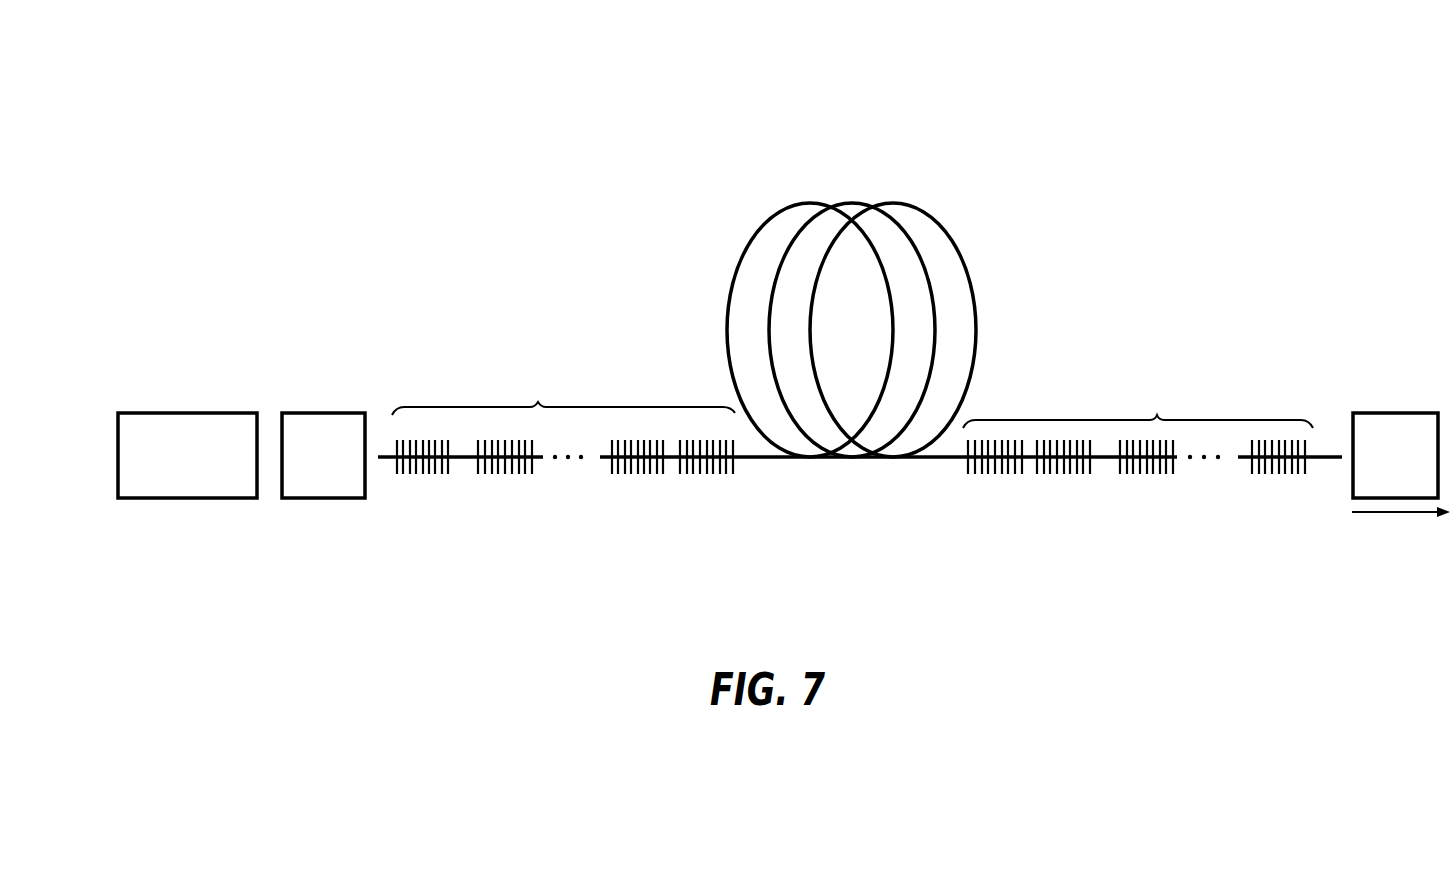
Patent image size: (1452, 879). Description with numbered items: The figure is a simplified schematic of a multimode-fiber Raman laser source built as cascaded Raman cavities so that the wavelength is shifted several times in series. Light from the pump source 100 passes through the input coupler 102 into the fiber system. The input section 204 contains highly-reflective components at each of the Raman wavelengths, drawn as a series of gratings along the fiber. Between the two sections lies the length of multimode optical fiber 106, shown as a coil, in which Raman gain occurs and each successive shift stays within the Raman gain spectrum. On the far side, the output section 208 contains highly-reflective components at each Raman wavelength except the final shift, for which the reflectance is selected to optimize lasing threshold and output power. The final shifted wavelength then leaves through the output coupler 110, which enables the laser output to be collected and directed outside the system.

The pump source 100 is at (173, 413).
The input coupler 102 is at (323, 413).
The input section 204 is at (538, 402).
The length of multimode optical fiber 106 is at (851, 203).
The output section 208 is at (1157, 415).
The output coupler 110 is at (1393, 413).